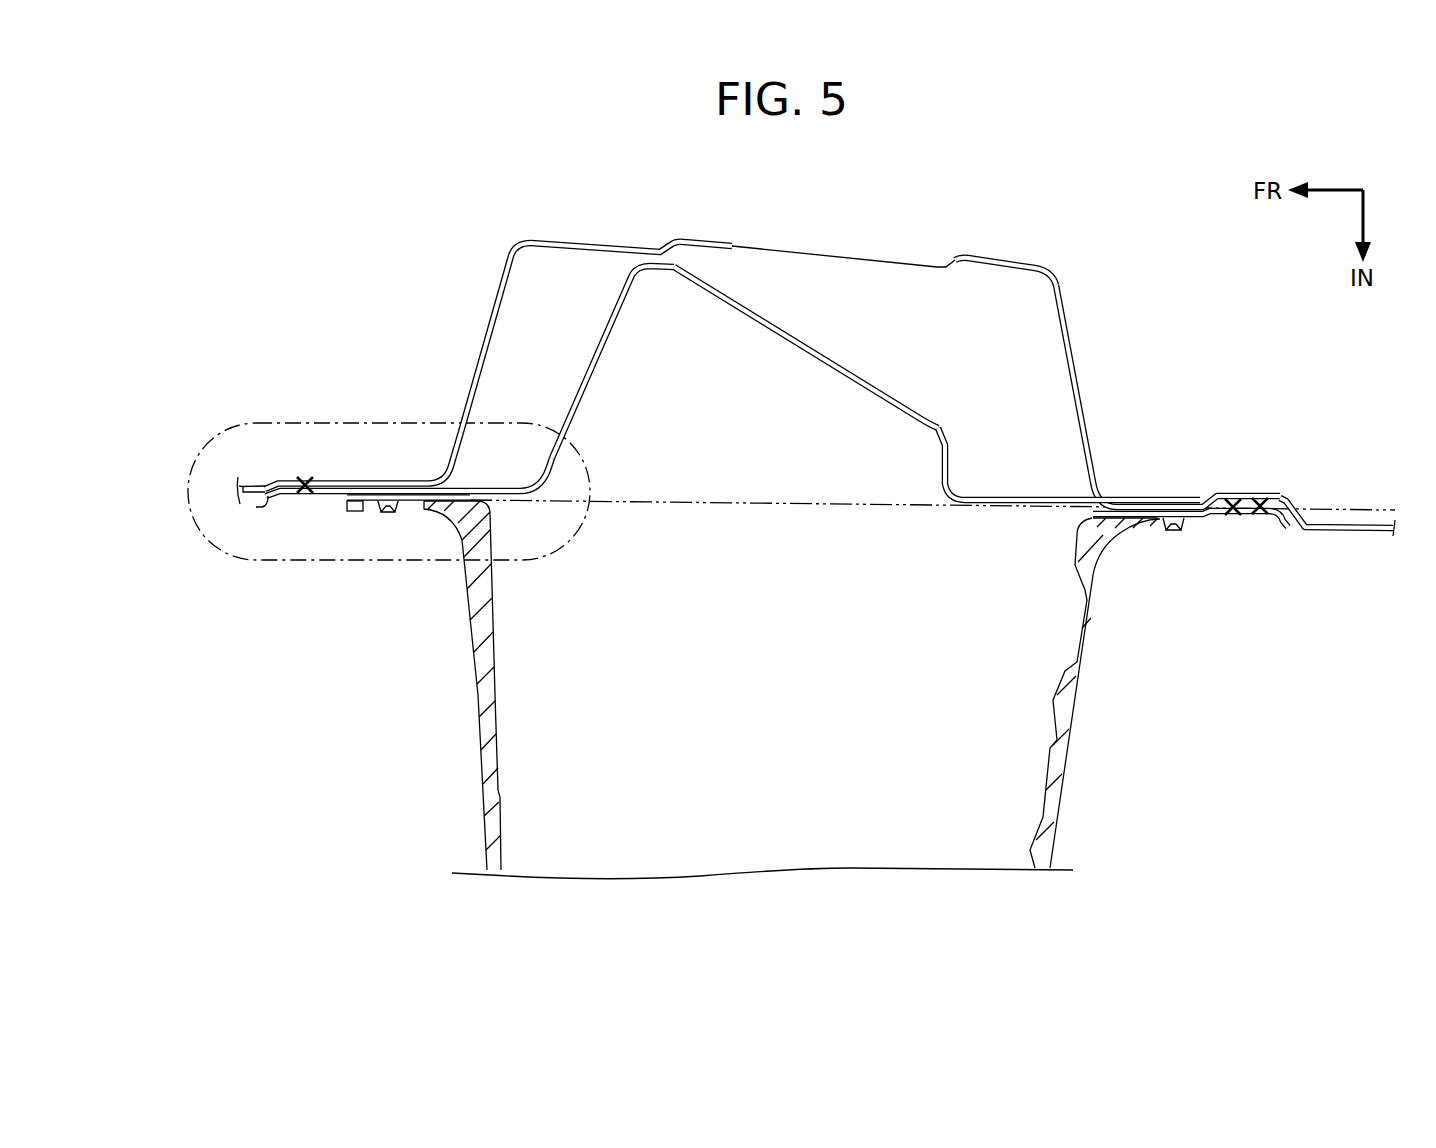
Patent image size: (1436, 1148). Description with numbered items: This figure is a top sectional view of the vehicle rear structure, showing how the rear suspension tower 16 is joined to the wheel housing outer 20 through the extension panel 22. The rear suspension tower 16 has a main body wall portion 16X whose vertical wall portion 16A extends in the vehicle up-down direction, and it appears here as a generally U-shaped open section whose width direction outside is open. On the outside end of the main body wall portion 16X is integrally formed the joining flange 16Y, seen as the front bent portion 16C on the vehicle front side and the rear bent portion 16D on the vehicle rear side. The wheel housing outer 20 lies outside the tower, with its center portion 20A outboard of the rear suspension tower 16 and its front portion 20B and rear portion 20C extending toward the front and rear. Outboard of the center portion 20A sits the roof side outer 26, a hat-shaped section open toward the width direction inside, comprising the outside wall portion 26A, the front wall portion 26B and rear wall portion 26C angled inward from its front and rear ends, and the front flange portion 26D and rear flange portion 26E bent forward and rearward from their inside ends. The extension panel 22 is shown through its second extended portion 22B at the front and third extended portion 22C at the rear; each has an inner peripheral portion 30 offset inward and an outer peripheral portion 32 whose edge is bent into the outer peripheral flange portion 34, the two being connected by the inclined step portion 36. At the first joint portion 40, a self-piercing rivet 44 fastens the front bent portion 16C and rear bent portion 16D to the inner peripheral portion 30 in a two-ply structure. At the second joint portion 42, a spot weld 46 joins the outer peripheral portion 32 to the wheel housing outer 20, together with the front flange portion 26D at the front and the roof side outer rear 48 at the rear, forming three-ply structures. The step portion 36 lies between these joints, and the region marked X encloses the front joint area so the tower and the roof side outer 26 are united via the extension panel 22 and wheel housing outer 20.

The rear suspension tower 16 is at (1067, 761).
The vertical wall portion 16A is at (419, 692).
The front bent portion 16C is at (366, 512).
The rear bent portion 16D is at (1192, 522).
The main body wall portion 16X is at (487, 747).
The joining flange 16Y is at (795, 591).
The wheel housing outer 20 is at (772, 383).
The center portion 20A is at (818, 345).
The front portion 20B is at (468, 487).
The rear portion 20C is at (1097, 495).
The extension panel 22 is at (804, 568).
The second extended portion 22B is at (300, 497).
The third extended portion 22C is at (1133, 519).
The roof side outer 26 is at (772, 349).
The outside wall portion 26A is at (561, 242).
The front wall portion 26B is at (492, 318).
The rear wall portion 26C is at (1074, 340).
The front flange portion 26D is at (380, 480).
The rear flange portion 26E is at (1158, 499).
The inner peripheral portion 30 is at (440, 506).
The outer peripheral portion 32 is at (262, 507).
The outer peripheral flange portion 34 is at (240, 504).
The step portion 36 is at (354, 512).
The first joint portion 40 is at (388, 514).
The second joint portion 42 is at (303, 479).
The self-piercing rivet 44 is at (797, 580).
The spot weld 46 is at (783, 490).
The roof side outer rear 48 is at (1362, 525).
The detail region X is at (317, 424).